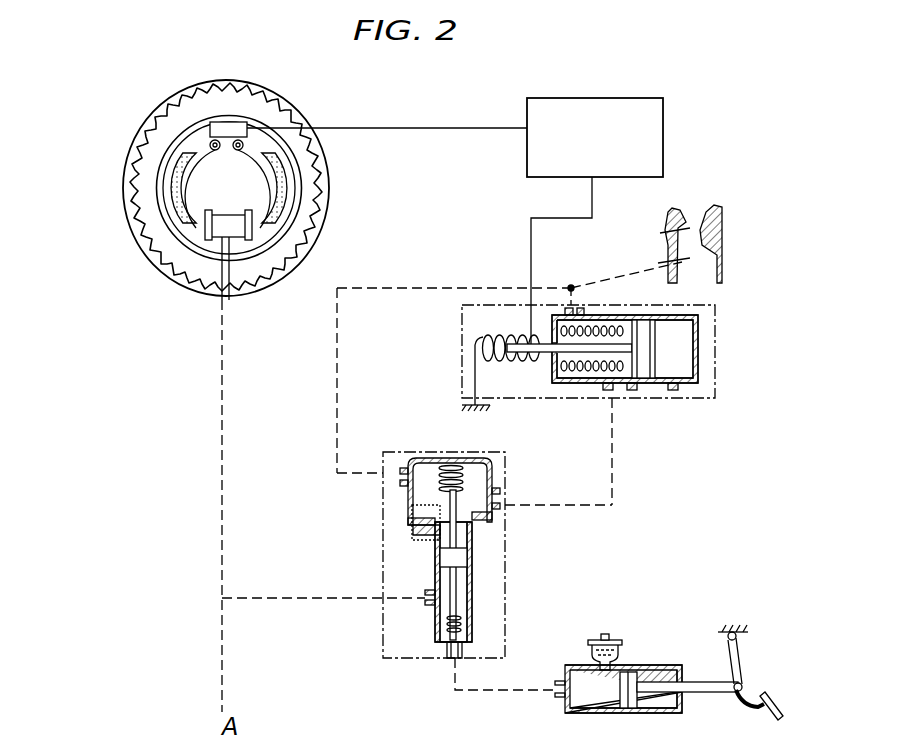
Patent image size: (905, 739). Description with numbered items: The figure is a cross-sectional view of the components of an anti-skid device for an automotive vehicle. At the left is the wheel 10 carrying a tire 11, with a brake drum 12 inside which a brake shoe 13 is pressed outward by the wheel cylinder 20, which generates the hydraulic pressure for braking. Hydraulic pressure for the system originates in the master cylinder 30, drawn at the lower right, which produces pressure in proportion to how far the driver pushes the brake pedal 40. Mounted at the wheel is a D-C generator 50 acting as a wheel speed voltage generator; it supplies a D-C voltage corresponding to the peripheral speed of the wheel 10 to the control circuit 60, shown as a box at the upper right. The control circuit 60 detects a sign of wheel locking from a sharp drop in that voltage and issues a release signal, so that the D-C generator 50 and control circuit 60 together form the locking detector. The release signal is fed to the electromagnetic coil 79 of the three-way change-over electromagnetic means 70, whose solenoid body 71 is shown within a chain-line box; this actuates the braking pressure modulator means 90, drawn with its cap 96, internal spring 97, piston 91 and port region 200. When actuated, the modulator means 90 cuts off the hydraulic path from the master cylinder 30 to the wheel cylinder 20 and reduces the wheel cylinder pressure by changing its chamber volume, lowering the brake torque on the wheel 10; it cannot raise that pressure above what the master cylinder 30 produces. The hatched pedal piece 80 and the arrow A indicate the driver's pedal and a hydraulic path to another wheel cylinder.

The wheel 10 is at (297, 104).
The tire 11 is at (314, 176).
The brake drum 12 is at (297, 194).
The brake shoe 13 is at (277, 212).
The wheel cylinder 20 is at (233, 228).
The D-C generator 50 is at (228, 122).
The control circuit 60 is at (608, 70).
The three-way change-over electromagnetic means 70 is at (655, 400).
The solenoid 71 is at (705, 343).
The electromagnetic coil 79 is at (480, 338).
The brake pedal 80 is at (724, 223).
The braking pressure modulator means 90 is at (508, 462).
The valve piston 91 is at (467, 558).
The valve cap 96 is at (472, 458).
The valve spring 97 is at (432, 490).
The valve port 200 is at (418, 540).
The master cylinder 30 is at (647, 665).
The brake pedal 40 is at (733, 660).